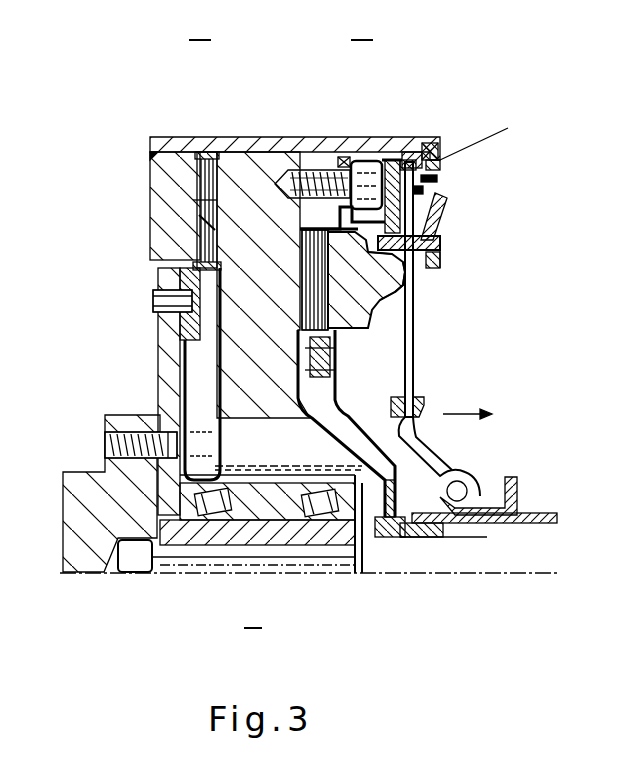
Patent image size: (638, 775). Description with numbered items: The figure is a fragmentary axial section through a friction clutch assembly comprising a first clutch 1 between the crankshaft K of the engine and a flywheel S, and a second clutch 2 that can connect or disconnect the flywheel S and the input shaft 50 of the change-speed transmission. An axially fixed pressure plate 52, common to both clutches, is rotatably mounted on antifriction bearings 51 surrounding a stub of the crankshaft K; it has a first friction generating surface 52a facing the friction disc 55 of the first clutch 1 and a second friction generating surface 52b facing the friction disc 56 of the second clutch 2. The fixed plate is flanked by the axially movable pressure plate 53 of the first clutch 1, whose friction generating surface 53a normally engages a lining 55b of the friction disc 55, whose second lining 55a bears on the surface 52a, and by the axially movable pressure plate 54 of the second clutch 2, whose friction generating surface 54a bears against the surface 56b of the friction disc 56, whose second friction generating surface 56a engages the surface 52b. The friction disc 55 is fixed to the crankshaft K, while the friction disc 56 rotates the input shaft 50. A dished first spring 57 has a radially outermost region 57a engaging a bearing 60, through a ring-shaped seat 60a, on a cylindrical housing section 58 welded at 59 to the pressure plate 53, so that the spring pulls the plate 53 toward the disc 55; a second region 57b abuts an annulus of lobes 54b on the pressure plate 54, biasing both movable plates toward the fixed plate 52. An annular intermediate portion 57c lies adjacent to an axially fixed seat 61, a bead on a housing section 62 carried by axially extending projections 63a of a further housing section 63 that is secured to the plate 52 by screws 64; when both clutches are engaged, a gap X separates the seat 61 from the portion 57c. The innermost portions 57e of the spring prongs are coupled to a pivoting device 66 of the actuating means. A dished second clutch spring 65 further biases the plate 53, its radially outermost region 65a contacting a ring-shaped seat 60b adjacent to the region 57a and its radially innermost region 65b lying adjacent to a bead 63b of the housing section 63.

The first clutch 1 is at (200, 26).
The second clutch 2 is at (362, 26).
The input shaft 50 is at (428, 555).
The antifriction bearings 51 is at (213, 507).
The axially fixed pressure plate 52 is at (258, 178).
The first friction generating surface 52a is at (196, 247).
The second friction generating surface 52b is at (405, 281).
The axially movable pressure plate 53 is at (157, 173).
The friction generating surface 53a is at (204, 222).
The axially movable pressure plate 54 is at (405, 332).
The friction generating surface 54a is at (322, 330).
The projections or lobes 54b is at (405, 303).
The friction disc 55 is at (156, 327).
The second lining 55a is at (218, 198).
The lining 55b is at (192, 203).
The friction disc 56 is at (393, 520).
The second friction generating surface 56a is at (262, 326).
The friction generating surface 56b is at (336, 304).
The dished first spring 57 is at (412, 365).
The radially outermost region 57a is at (410, 160).
The second region 57b is at (405, 288).
The annular intermediate portion 57c is at (437, 180).
The innermost portions 57e is at (423, 401).
The cylindrical housing section 58 is at (187, 140).
The weld 59 is at (152, 153).
The bearing 60 is at (428, 163).
The ring-shaped seat 60a is at (422, 157).
The ring-shaped seat 60b is at (402, 158).
The axially fixed seat 61 is at (443, 242).
The housing section 62 is at (441, 262).
The housing section 63 is at (339, 170).
The axially extending projections 63a is at (517, 250).
The bead 63b is at (441, 222).
The screws 64 is at (356, 186).
The dished second clutch spring 65 is at (345, 197).
The radially outermost region 65a is at (389, 160).
The radially innermost region 65b is at (423, 192).
The pivoting device 66 is at (482, 472).
The crankshaft K is at (58, 586).
The flywheel S is at (253, 614).
The clearance or gap X is at (478, 138).